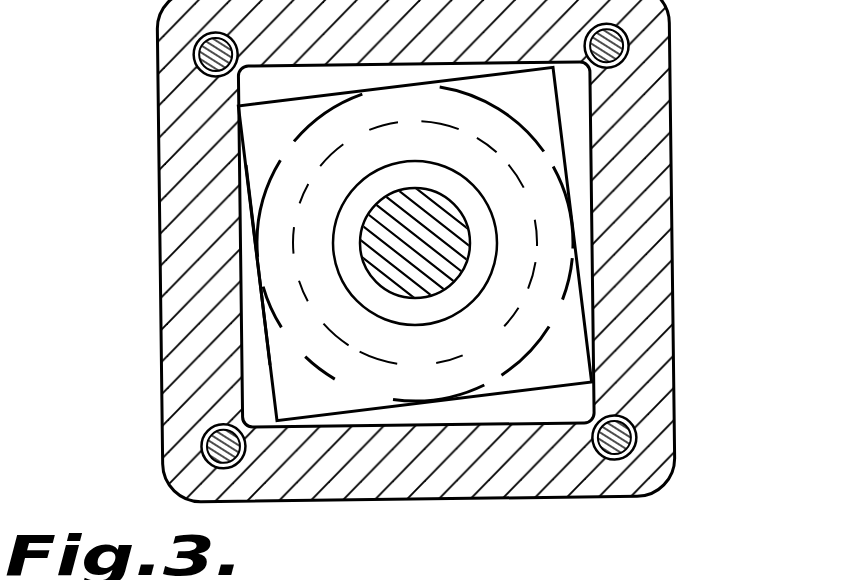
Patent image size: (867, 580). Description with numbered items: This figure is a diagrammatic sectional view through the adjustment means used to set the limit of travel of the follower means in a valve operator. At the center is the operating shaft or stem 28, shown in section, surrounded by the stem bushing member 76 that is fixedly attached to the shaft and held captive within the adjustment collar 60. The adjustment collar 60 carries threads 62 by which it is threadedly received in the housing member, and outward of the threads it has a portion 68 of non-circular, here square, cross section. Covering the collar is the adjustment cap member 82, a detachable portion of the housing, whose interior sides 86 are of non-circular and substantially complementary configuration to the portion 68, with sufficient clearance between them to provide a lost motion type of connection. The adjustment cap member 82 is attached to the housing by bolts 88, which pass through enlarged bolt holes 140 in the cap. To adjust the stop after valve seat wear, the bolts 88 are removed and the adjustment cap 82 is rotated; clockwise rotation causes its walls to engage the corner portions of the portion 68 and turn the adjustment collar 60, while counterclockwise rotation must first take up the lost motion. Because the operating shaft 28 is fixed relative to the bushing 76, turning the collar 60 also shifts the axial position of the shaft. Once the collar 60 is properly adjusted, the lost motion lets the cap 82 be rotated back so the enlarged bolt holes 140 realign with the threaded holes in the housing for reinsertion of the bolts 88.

The operating shaft or stem 28 is at (468, 230).
The adjustment collar 60 is at (499, 393).
The threads 62 is at (353, 378).
The non-circular portion 68 is at (268, 372).
The stem bushing member 76 is at (445, 318).
The adjustment cap member 82 is at (673, 167).
The interior of the adjustment cap member 86 is at (587, 125).
The bolts 88 is at (632, 38).
The enlarged bolt holes 140 is at (202, 62).